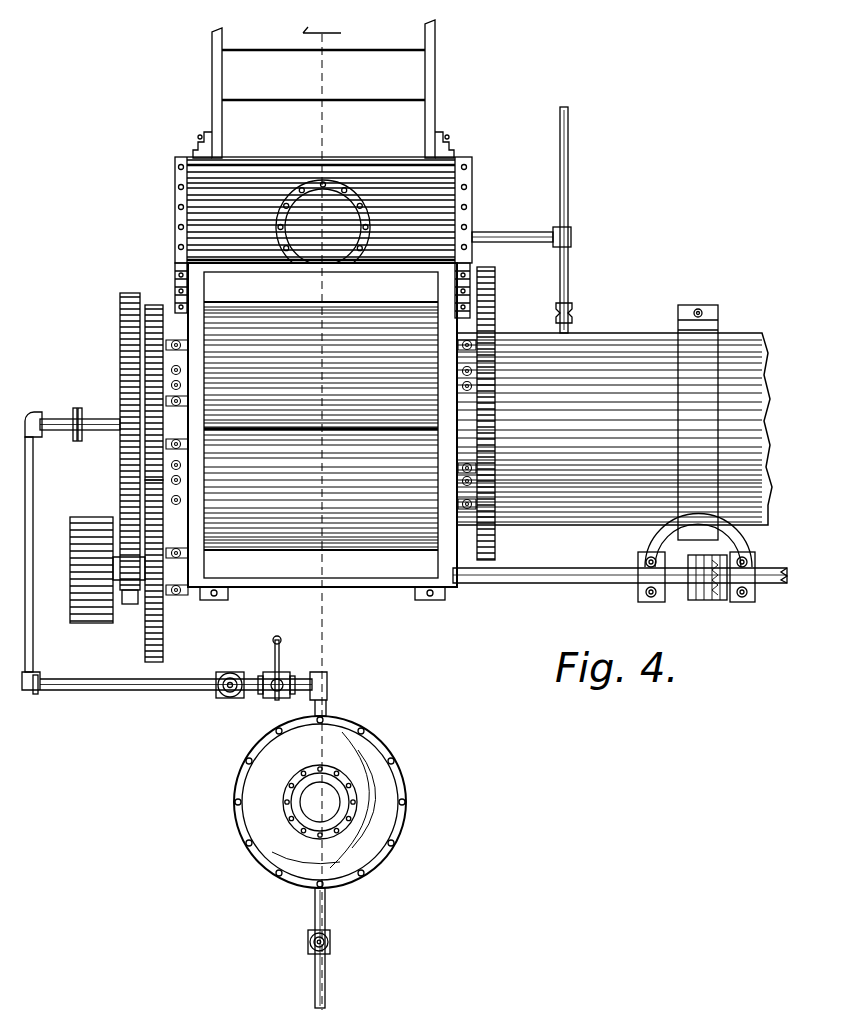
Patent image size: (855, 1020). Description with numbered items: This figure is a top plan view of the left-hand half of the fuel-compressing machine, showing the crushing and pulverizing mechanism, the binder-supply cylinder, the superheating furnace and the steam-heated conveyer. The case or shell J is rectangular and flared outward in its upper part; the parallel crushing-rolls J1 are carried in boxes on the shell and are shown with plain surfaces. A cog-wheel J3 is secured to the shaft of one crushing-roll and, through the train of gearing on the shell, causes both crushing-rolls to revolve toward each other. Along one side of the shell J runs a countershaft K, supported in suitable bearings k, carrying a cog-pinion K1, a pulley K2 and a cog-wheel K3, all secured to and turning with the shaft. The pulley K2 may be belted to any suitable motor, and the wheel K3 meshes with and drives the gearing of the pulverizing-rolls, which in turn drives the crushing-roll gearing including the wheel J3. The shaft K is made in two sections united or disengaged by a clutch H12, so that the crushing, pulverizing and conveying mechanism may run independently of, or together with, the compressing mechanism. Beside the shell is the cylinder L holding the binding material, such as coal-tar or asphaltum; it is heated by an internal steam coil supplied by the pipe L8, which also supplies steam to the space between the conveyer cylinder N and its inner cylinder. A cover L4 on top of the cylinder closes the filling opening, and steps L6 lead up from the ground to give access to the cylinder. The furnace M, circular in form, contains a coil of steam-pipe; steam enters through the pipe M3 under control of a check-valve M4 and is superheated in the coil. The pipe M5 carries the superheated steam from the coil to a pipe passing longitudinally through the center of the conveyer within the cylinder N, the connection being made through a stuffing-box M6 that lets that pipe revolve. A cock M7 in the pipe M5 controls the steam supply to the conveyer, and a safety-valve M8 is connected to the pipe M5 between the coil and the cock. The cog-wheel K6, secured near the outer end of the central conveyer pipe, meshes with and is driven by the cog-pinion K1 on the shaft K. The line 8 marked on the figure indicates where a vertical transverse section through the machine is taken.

The section line 8 is at (322, 18).
The steps L6 is at (323, 89).
The cylinder L is at (323, 237).
The cover L4 is at (323, 221).
The pipe L8 is at (540, 220).
The case or shell J is at (321, 431).
The crushing-rolls J1 is at (321, 426).
The cog-wheel J3 is at (152, 303).
The cog-wheel K3 is at (173, 613).
The cog-wheel K6 is at (120, 328).
The cog-pinion K1 is at (128, 605).
The pulley K2 is at (87, 608).
The stuffing-box M6 is at (97, 397).
The pipe M5 is at (132, 685).
The cock M7 is at (242, 658).
The safety-valve M8 is at (297, 657).
The furnace M is at (320, 802).
The pipe M3 is at (315, 970).
The check-valve M4 is at (330, 941).
The cylinder N is at (615, 422).
The countershaft K is at (530, 573).
The bearing k is at (637, 590).
The clutch H12 is at (708, 605).